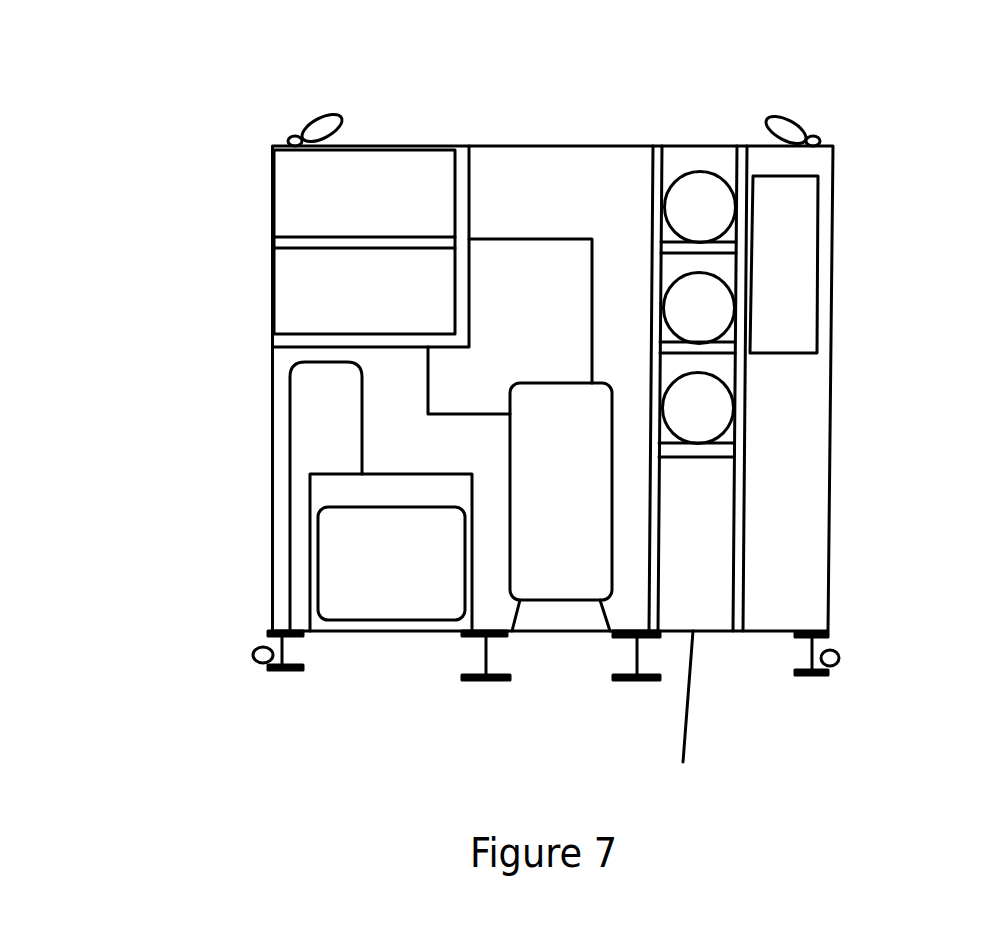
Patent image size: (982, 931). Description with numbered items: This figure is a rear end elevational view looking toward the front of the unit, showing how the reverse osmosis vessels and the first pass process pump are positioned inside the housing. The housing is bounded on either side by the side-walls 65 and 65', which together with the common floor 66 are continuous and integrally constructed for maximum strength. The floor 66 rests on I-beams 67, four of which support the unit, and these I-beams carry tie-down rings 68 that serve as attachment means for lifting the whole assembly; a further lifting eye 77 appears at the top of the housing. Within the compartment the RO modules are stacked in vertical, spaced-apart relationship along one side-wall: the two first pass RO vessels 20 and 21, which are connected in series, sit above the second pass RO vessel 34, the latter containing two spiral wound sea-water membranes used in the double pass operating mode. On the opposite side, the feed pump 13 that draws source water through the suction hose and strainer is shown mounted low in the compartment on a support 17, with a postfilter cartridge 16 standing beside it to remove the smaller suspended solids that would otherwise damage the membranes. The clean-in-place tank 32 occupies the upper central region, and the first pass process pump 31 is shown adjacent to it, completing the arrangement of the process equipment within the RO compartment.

The feed pump 13 is at (410, 575).
The postfilter cartridge 16 is at (292, 407).
The support box 17 is at (310, 495).
The RO vessel 20 is at (688, 178).
The RO vessel 21 is at (714, 277).
The second pass RO vessel 34 is at (722, 384).
The pump unit 31 is at (582, 455).
The clean-in-place tank 32 is at (535, 335).
The side-wall 65 is at (617, 388).
The side-wall 65' is at (307, 246).
The floor 66 is at (681, 718).
The I-beam 67 is at (613, 678).
The tie-down ring 68 is at (837, 653).
The lifting eye 77 is at (340, 118).